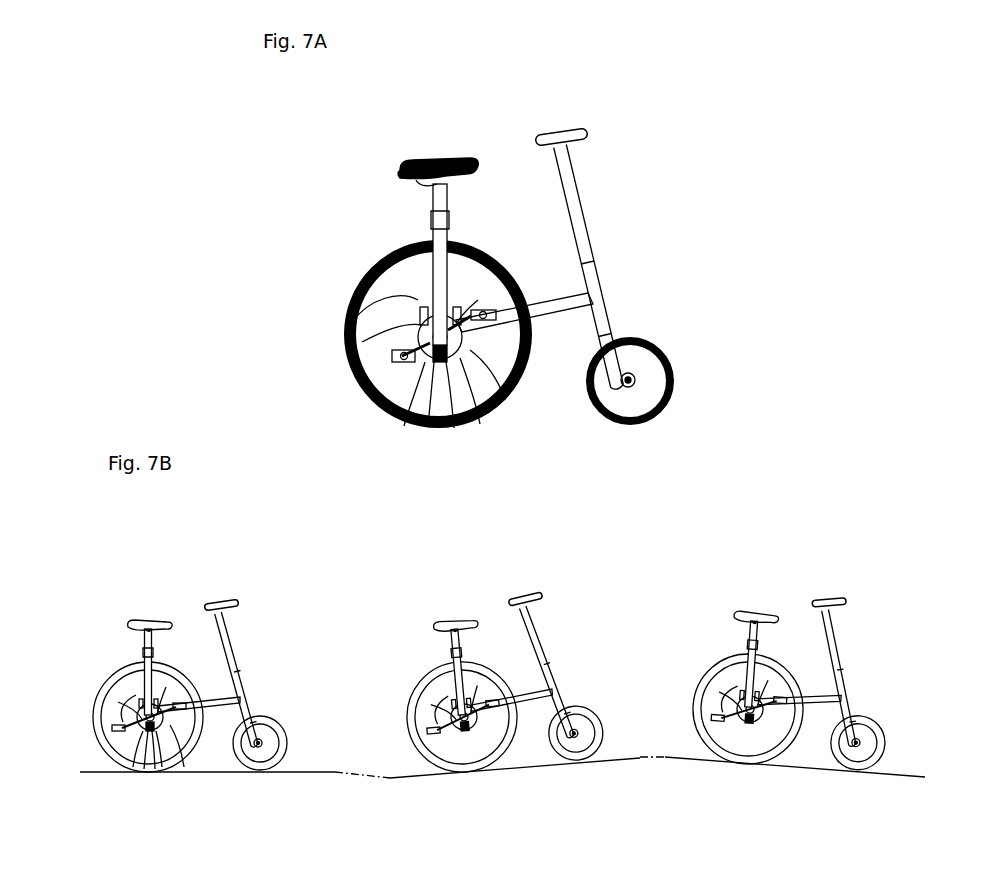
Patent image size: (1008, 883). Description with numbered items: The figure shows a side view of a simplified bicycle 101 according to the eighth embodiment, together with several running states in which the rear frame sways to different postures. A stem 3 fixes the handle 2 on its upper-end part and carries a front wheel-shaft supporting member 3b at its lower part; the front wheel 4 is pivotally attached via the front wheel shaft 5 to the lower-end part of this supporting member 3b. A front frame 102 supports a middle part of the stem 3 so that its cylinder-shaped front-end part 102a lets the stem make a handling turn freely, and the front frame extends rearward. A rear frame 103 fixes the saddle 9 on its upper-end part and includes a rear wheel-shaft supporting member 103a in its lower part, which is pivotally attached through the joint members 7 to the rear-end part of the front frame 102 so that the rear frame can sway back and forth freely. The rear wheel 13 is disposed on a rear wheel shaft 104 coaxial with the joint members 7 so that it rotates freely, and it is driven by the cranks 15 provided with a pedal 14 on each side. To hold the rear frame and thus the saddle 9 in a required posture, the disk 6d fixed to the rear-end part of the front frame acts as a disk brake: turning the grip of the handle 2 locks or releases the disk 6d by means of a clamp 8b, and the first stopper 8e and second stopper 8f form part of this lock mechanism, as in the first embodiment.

In FIG. 7A, the handle 2 is at (582, 140).
In FIG. 7B, the handle 2 is at (238, 605).
In FIG. 7A, the stem 3 is at (578, 185).
In FIG. 7B, the stem 3 is at (240, 642).
In FIG. 7A, the front wheel-shaft supporting member 3b is at (613, 350).
In FIG. 7B, the front wheel-shaft supporting member 3b is at (266, 722).
In FIG. 7A, the front wheel 4 is at (665, 410).
In FIG. 7B, the front wheel 4 is at (288, 758).
In FIG. 7A, the front wheel shaft 5 is at (640, 380).
In FIG. 7B, the front wheel shaft 5 is at (268, 741).
In FIG. 7A, the disk 6d is at (452, 422).
In FIG. 7B, the disk 6d is at (160, 762).
In FIG. 7A, the joint member 7 is at (408, 418).
In FIG. 7B, the joint member 7 is at (137, 760).
In FIG. 7A, the clamp 8b is at (428, 420).
In FIG. 7B, the clamp 8b is at (150, 762).
In FIG. 7A, the first stopper 8e is at (463, 300).
In FIG. 7B, the first stopper 8e is at (165, 700).
In FIG. 7A, the second stopper 8f is at (398, 302).
In FIG. 7B, the second stopper 8f is at (120, 705).
In FIG. 7A, the saddle 9 is at (437, 164).
In FIG. 7B, the saddle 9 is at (146, 618).
In FIG. 7A, the rear wheel 13 is at (350, 392).
In FIG. 7B, the rear wheel 13 is at (120, 768).
In FIG. 7A, the pedal 14 is at (393, 357).
In FIG. 7B, the pedal 14 is at (120, 738).
In FIG. 7A, the crank 15 is at (398, 345).
In FIG. 7B, the crank 15 is at (130, 727).
In FIG. 7A, the bicycle 101 is at (520, 108).
In FIG. 7B, the bicycle 101 is at (183, 583).
In FIG. 7A, the front frame 102 is at (546, 308).
In FIG. 7B, the front frame 102 is at (216, 702).
In FIG. 7A, the front-end part 102a is at (598, 302).
In FIG. 7B, the front-end part 102a is at (238, 690).
In FIG. 7A, the rear frame 103 is at (432, 224).
In FIG. 7B, the rear frame 103 is at (145, 656).
In FIG. 7A, the rear wheel-shaft supporting member 103a is at (425, 262).
In FIG. 7B, the rear wheel-shaft supporting member 103a is at (135, 680).
In FIG. 7A, the rear wheel shaft 104 is at (440, 346).
In FIG. 7B, the rear wheel shaft 104 is at (450, 718).